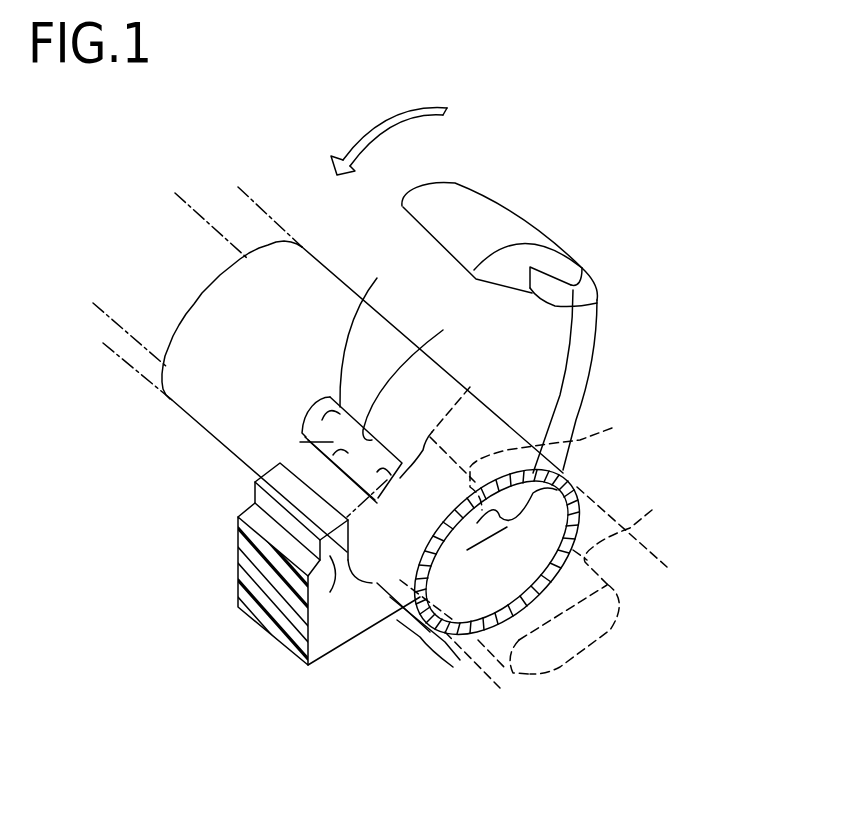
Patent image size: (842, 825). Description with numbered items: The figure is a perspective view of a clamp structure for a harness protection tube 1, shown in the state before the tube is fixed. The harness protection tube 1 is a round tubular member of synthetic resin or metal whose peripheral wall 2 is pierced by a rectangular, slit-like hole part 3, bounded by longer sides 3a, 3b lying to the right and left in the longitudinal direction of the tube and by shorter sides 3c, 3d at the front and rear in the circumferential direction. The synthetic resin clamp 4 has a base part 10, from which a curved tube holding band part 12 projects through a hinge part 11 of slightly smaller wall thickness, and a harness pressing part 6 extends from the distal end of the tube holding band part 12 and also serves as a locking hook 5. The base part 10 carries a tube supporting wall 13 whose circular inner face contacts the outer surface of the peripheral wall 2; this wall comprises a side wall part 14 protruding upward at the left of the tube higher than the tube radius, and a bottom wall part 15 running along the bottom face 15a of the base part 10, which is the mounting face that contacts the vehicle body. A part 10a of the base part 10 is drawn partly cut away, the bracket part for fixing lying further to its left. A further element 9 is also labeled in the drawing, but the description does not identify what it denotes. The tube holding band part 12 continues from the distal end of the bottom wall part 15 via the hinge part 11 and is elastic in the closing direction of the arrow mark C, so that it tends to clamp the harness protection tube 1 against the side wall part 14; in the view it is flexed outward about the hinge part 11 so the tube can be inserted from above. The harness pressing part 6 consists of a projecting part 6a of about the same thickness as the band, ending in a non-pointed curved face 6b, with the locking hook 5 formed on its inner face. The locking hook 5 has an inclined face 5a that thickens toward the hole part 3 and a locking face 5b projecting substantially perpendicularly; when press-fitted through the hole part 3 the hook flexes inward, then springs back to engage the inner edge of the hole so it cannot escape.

The harness protection tube 1 is at (568, 474).
The peripheral wall 2 is at (223, 362).
The hole part 3 is at (314, 440).
The longer side 3a is at (240, 524).
The longer side 3b is at (409, 375).
The shorter side 3c is at (378, 583).
The shorter side 3d is at (364, 333).
The clamp 4 is at (308, 602).
The locking hook 5 is at (574, 305).
The inclined face 5a is at (456, 262).
The locking face 5b is at (572, 277).
The harness pressing part 6 is at (504, 206).
The projecting part 6a is at (545, 260).
The curved face 6b is at (459, 240).
The pipe 9 is at (625, 537).
The base part 10 is at (357, 638).
The part 10a is at (255, 570).
The hinge part 11 is at (519, 448).
The tube holding band part 12 is at (593, 368).
The tube supporting wall 13 is at (360, 623).
The side wall part 14 is at (277, 600).
The bottom wall part 15 is at (550, 664).
The bottom face 15a is at (451, 638).
The arrow mark C is at (389, 138).